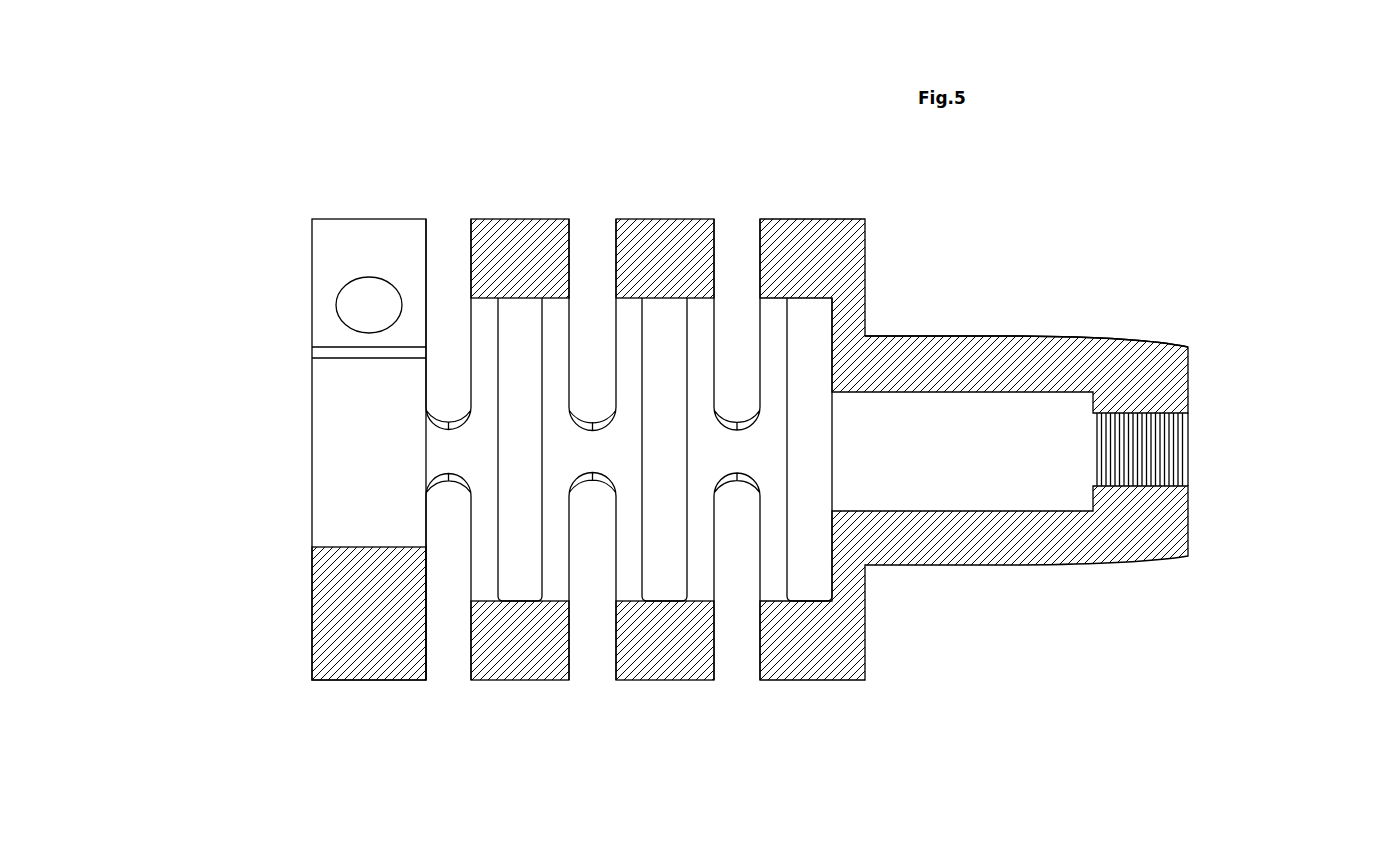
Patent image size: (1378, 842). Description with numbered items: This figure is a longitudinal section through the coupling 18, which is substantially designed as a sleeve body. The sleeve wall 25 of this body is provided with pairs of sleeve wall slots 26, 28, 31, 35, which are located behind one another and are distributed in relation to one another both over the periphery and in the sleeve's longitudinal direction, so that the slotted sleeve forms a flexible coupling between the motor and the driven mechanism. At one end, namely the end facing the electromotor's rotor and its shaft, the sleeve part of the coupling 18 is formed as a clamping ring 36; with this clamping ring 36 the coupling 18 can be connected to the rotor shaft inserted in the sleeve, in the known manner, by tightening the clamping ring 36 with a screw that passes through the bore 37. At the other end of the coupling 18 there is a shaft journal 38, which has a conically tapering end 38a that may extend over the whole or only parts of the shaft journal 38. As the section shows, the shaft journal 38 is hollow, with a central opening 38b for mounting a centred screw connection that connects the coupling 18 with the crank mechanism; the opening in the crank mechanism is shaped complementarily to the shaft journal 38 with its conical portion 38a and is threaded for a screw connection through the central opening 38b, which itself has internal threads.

The coupling 18 is at (258, 178).
The sleeve wall 25 is at (520, 647).
The sleeve wall slot 26 is at (453, 270).
The sleeve wall slot 28 is at (520, 428).
The sleeve wall slot 31 is at (667, 577).
The sleeve wall slot 35 is at (820, 573).
The clamping ring 36 is at (328, 326).
The bore 37 is at (363, 307).
The shaft journal 38 is at (1030, 540).
The conically tapering end 38a is at (1130, 338).
The central opening 38b is at (1168, 458).